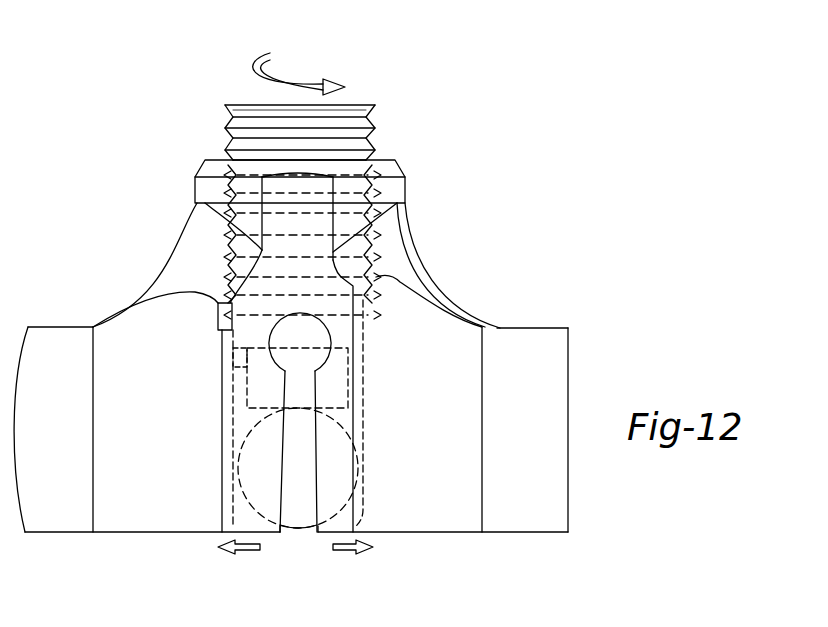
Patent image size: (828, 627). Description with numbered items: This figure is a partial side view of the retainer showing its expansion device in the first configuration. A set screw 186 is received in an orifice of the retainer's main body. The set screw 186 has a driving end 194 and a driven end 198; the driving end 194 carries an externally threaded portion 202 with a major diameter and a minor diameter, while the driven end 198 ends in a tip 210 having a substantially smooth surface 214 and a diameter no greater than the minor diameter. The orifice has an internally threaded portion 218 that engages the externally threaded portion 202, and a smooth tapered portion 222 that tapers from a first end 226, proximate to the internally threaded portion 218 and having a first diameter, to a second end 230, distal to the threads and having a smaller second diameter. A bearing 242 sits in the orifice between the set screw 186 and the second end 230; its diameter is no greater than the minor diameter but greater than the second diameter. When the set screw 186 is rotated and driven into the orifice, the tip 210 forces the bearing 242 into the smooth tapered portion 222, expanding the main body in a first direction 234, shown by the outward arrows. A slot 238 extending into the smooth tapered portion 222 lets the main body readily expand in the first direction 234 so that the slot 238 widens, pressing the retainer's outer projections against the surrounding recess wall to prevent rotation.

The set screw 186 is at (352, 121).
The driving end 194 is at (240, 103).
The externally threaded portion 202 is at (375, 140).
The internally threaded portion 218 is at (250, 267).
The substantially smooth surface 214 is at (245, 363).
The driven end 198 is at (258, 397).
The tip 210 is at (352, 423).
The first end 226 is at (360, 462).
The smooth tapered portion 222 is at (333, 528).
The second end 230 is at (327, 537).
The first direction 234 is at (250, 556).
The slot 238 is at (288, 533).
The bearing 242 is at (305, 533).